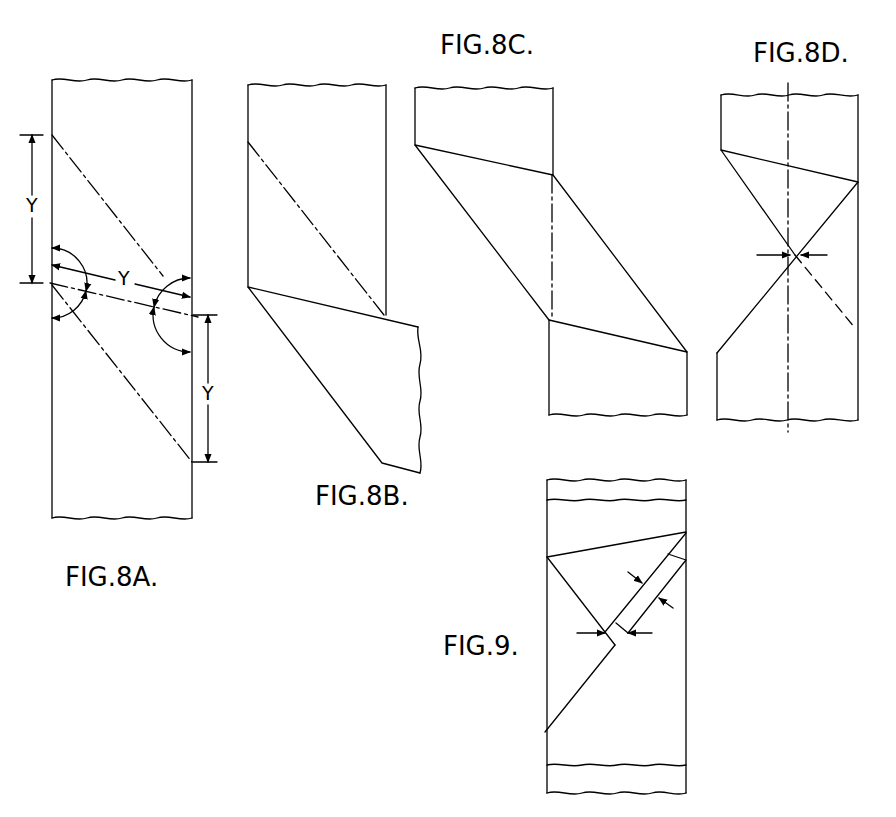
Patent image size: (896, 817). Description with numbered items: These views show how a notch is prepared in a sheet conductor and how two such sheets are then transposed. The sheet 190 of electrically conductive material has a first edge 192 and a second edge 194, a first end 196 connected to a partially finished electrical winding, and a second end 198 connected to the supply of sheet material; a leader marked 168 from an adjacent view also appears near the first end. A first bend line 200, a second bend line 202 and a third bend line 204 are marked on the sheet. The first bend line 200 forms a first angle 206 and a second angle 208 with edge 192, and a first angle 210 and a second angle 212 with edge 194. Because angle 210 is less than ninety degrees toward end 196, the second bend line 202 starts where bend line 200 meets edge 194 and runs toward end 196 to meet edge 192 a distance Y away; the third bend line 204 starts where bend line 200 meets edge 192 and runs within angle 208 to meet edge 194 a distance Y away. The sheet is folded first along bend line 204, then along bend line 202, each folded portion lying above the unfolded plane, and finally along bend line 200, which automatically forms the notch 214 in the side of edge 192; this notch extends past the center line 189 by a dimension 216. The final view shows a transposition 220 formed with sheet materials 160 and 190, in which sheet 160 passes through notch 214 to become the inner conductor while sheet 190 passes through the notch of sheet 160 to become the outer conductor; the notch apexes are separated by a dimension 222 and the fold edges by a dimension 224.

In FIG. 9, the sheet material 160 is at (553, 513).
In FIG. 8A, the sheet supply roll 168 is at (90, 0).
In FIG. 8D, the center line 189 is at (787, 353).
In FIG. 8A, the sheet of electrically conductive material 190 is at (131, 298).
In FIG. 8B, the sheet of electrically conductive material 190 is at (337, 265).
In FIG. 8C, the sheet of electrically conductive material 190 is at (551, 240).
In FIG. 8D, the sheet of electrically conductive material 190 is at (774, 243).
In FIG. 9, the sheet of electrically conductive material 190 is at (744, 500).
In FIG. 8A, the first edge 192 is at (52, 384).
In FIG. 8A, the second edge 194 is at (192, 497).
In FIG. 8A, the first end 196 is at (77, 80).
In FIG. 8B, the first end 196 is at (268, 85).
In FIG. 8C, the first end 196 is at (553, 88).
In FIG. 8D, the first end 196 is at (732, 95).
In FIG. 8A, the second end 198 is at (60, 518).
In FIG. 8A, the first bend line 200 is at (110, 297).
In FIG. 8C, the first bend line 200 is at (553, 252).
In FIG. 8A, the second bend line 202 is at (101, 196).
In FIG. 8B, the second bend line 202 is at (287, 191).
In FIG. 8A, the third bend line 204 is at (148, 407).
In FIG. 8A, the first angle 206 is at (78, 258).
In FIG. 8A, the second angle 208 is at (70, 321).
In FIG. 8A, the first angle 210 is at (176, 281).
In FIG. 8A, the second angle 212 is at (157, 330).
In FIG. 8D, the notch 214 is at (770, 242).
In FIG. 8D, the dimension 216 is at (792, 260).
In FIG. 9, the transposition 220 is at (744, 640).
In FIG. 9, the dimension 222 is at (610, 638).
In FIG. 9, the dimension 224 is at (650, 590).